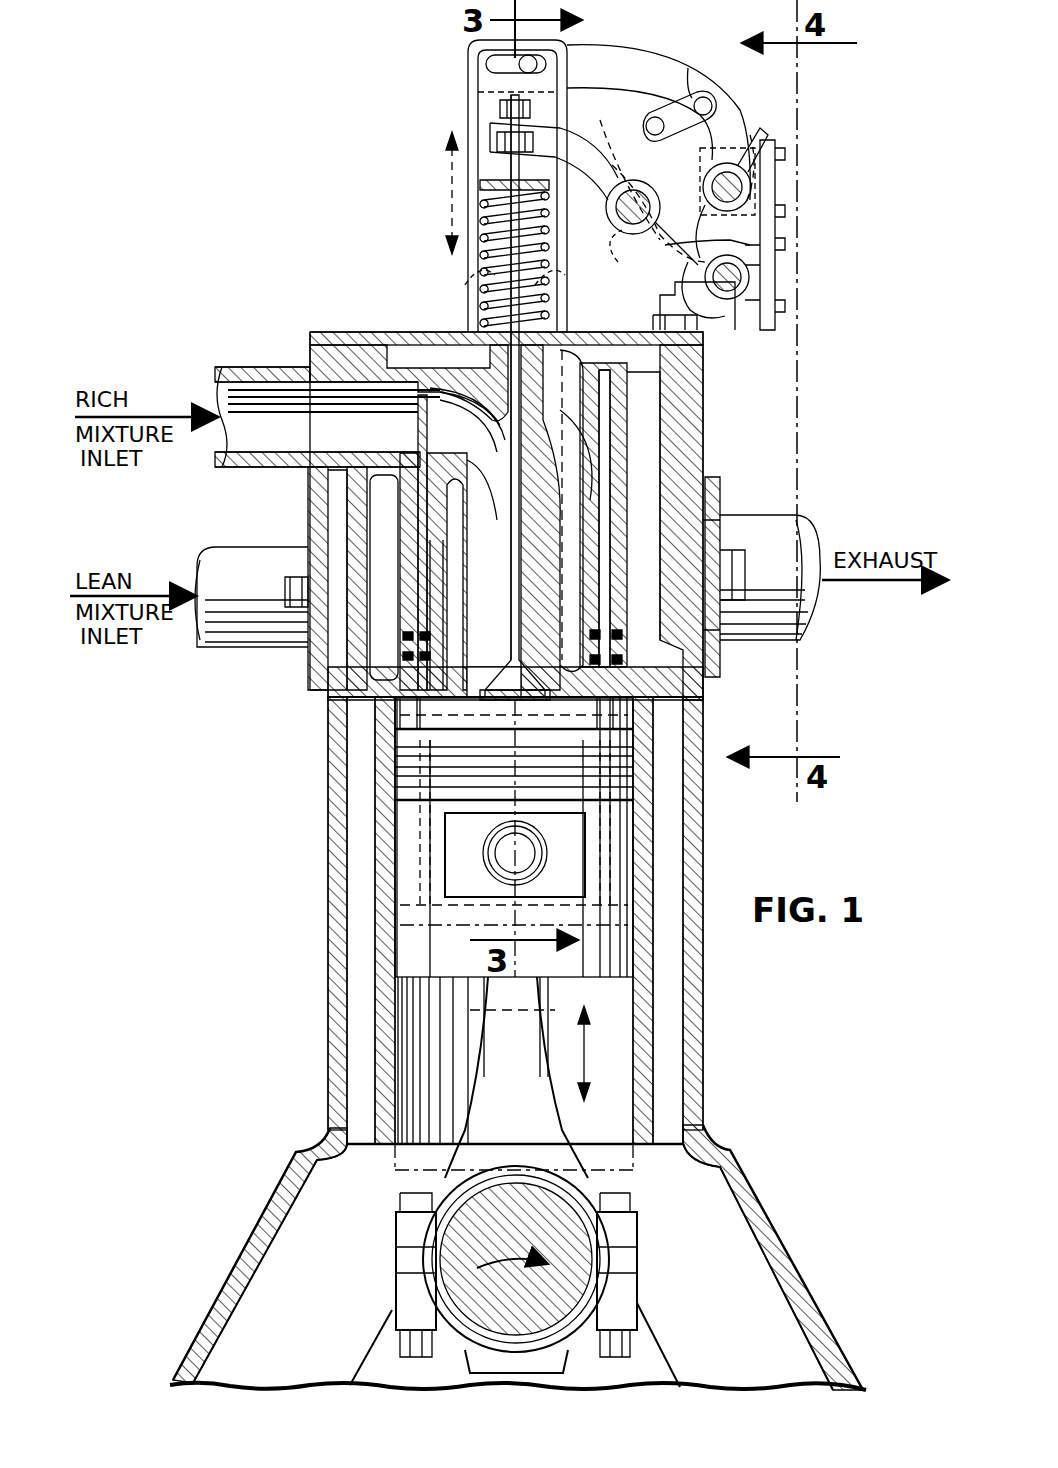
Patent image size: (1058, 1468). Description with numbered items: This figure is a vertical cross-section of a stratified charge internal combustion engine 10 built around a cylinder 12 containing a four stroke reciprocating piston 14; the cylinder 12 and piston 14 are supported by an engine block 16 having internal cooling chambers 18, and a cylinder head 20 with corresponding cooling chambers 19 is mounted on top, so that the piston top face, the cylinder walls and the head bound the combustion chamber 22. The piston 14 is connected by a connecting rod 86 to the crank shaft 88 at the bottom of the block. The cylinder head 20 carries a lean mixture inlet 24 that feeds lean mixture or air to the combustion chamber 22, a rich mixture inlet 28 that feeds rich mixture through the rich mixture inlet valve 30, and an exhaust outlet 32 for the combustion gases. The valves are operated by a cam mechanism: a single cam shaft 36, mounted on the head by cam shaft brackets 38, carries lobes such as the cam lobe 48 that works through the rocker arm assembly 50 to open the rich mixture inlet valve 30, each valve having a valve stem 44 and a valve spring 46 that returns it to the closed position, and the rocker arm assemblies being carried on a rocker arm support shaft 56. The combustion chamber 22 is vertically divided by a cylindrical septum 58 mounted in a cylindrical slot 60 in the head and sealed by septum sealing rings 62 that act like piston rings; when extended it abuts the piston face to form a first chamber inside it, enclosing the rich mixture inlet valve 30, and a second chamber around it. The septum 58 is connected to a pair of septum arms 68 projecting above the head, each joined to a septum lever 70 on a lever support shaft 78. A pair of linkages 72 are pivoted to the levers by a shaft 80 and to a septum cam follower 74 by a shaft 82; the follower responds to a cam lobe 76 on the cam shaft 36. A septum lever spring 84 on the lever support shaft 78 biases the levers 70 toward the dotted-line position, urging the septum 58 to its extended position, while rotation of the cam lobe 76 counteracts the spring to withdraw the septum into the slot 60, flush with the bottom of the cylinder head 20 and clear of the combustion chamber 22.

The internal combustion engine 10 is at (328, 862).
The cylinder 12 is at (646, 1033).
The reciprocating piston 14 is at (410, 944).
The engine block 16 is at (706, 1082).
The cooling chambers 18 is at (357, 776).
The cooling chambers 19 is at (648, 470).
The cylinder head 20 is at (698, 418).
The combustion chamber 22 is at (400, 705).
The lean mixture inlet 24 is at (246, 634).
The rich mixture inlet 28 is at (256, 366).
The rich mixture inlet valve 30 is at (508, 698).
The exhaust outlet 32 is at (820, 622).
The cam shaft 36 is at (770, 332).
The cam shaft brackets 38 is at (714, 336).
The valve stem 44 is at (511, 442).
The valve spring 46 is at (490, 288).
The cam lobe 48 is at (752, 282).
The rocker arm assembly 50 is at (497, 130).
The rocker arm support shaft 56 is at (625, 226).
The cylindrical septum 58 is at (437, 417).
The cylindrical slot 60 is at (425, 553).
The septum sealing rings 62 is at (405, 658).
The septum arms 68 is at (468, 76).
The septum lever 70 is at (615, 58).
The linkages 72 is at (686, 68).
The septum cam follower 74 is at (618, 262).
The cam lobe 76 is at (686, 300).
The lever support shaft 78 is at (752, 186).
The shaft 80 is at (706, 108).
The shaft 82 is at (648, 120).
The septum lever spring 84 is at (762, 126).
The connecting rod 86 is at (525, 1131).
The crank shaft 88 is at (462, 1287).